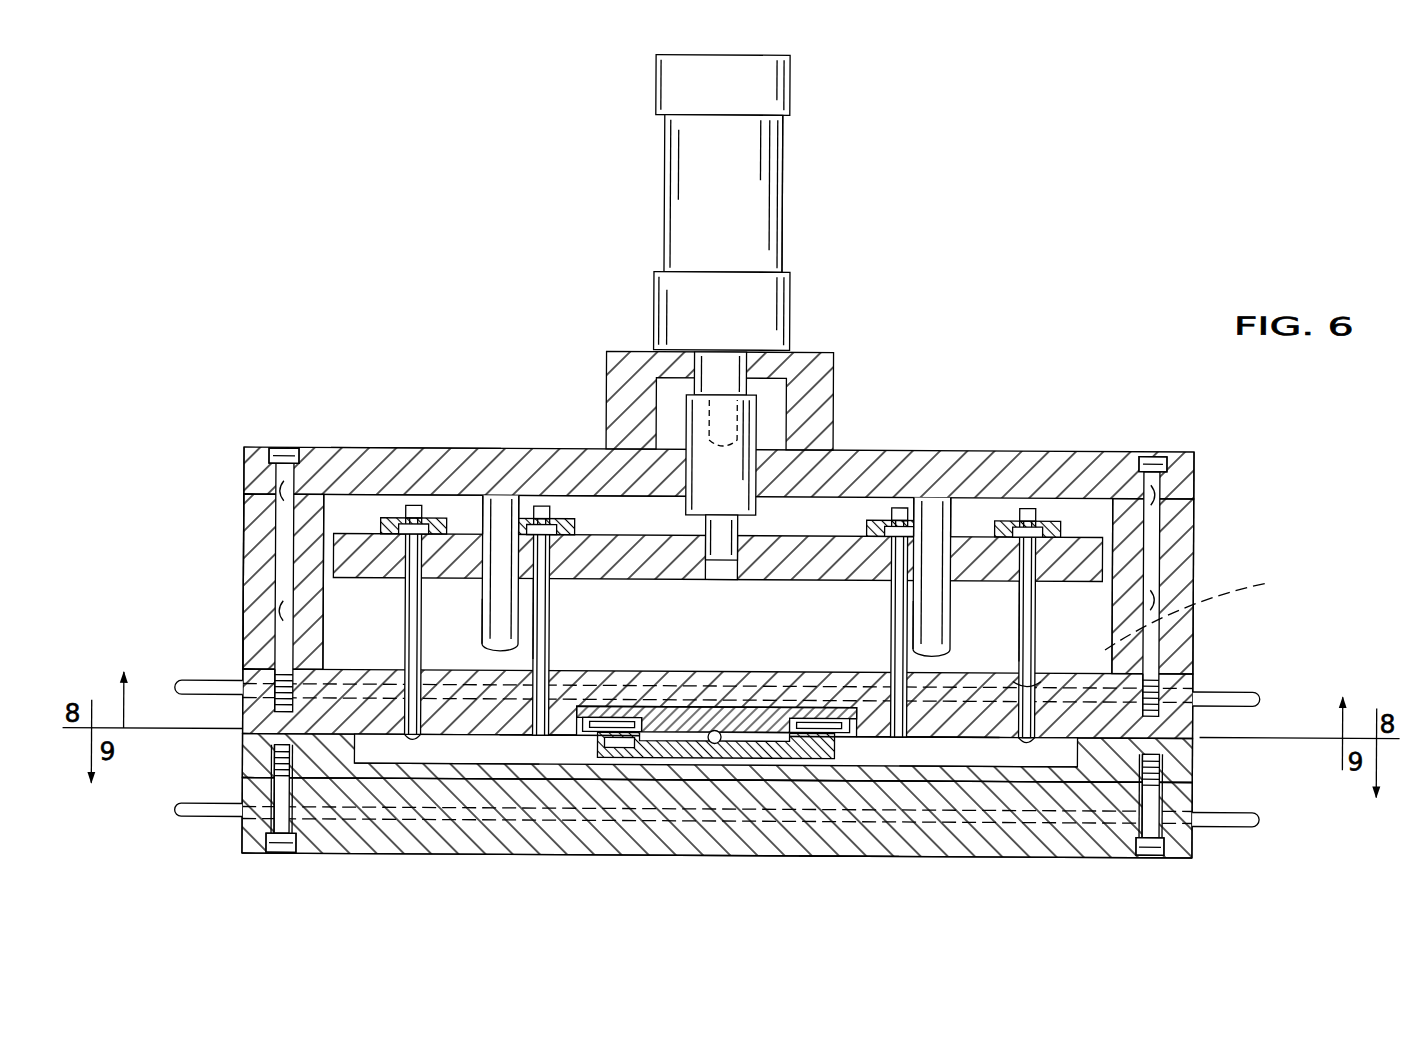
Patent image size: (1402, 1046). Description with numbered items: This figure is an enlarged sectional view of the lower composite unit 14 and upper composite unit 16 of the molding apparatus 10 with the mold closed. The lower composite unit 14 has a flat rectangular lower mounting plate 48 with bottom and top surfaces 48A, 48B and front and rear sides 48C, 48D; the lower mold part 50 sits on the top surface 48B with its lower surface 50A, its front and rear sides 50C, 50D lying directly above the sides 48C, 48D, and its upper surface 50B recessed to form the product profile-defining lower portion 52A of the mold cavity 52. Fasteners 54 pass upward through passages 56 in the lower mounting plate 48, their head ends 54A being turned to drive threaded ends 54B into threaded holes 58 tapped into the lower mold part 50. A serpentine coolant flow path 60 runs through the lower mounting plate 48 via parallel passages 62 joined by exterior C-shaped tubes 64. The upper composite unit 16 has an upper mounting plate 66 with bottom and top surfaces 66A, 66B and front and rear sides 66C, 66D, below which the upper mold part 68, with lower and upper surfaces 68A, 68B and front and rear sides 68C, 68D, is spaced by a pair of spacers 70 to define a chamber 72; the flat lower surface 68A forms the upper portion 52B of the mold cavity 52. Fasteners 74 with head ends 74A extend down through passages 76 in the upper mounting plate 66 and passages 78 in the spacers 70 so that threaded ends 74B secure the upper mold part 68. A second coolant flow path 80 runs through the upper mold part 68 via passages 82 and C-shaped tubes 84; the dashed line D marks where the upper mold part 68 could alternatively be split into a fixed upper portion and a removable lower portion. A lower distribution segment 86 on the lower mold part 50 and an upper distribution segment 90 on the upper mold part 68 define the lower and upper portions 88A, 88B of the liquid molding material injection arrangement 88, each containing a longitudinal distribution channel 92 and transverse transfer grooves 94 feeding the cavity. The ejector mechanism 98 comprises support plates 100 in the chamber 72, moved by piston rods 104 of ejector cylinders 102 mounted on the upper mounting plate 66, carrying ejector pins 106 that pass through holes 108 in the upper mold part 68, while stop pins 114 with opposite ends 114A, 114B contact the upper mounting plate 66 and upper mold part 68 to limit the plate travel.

The apparatus 10 is at (1040, 310).
The lower composite unit 14 is at (225, 838).
The upper composite unit 16 is at (341, 448).
The lower mounting plate 48 is at (592, 857).
The bottom surface 48A is at (865, 857).
The top surface 48B is at (540, 782).
The front side 48C is at (243, 851).
The rear side 48D is at (1212, 847).
The lower mold part 50 is at (1195, 762).
The lower surface 50A is at (400, 753).
The upper surface 50B is at (1125, 758).
The front side 50C is at (243, 745).
The rear side 50D is at (1195, 742).
The mold cavity 52 is at (537, 739).
The lower portion of mold cavity 52A is at (405, 761).
The upper portion of mold cavity 52B is at (512, 613).
The fasteners 54 is at (275, 854).
The tool-engaging head ends 54A is at (285, 857).
The threaded ends 54B is at (280, 763).
The passages 56 is at (297, 792).
The internally threaded holes 58 is at (285, 798).
The coolant flow path 60 is at (1025, 828).
The passages 62 is at (885, 795).
The C-shaped tubes 64 is at (210, 828).
The upper mounting plate 66 is at (1056, 448).
The bottom surface 66A is at (1097, 498).
The top surface 66B is at (405, 449).
The front side 66C is at (243, 465).
The rear side 66D is at (1193, 460).
The upper mold part 68 is at (1195, 678).
The lower surface 68A is at (590, 668).
The upper surface 68B is at (750, 682).
The front side 68C is at (243, 675).
The rear side 68D is at (1195, 697).
The spacers 70 is at (243, 550).
The chamber 72 is at (585, 519).
The fasteners 74 is at (290, 548).
The wrench-engaging head ends 74A is at (285, 449).
The threaded ends 74B is at (280, 678).
The passages 76 is at (283, 528).
The passages 78 is at (285, 638).
The coolant flow path 80 is at (680, 683).
The passages 82 is at (1027, 680).
The C-shaped tubes 84 is at (178, 689).
The lower liquid molding material distribution segment 86 is at (825, 760).
The liquid molding material injection arrangement 88 is at (585, 746).
The lower portion of injection arrangement 88A is at (700, 765).
The upper portion of injection arrangement 88B is at (760, 765).
The upper liquid molding material distribution segment 90 is at (715, 730).
The distribution channel 92 is at (712, 758).
The transfer grooves 94 is at (655, 760).
The ejector mechanism 98 is at (828, 152).
The support plates 100 is at (987, 542).
The ejector cylinders 102 is at (783, 215).
The piston rods 104 is at (752, 440).
The ejector pins 106 is at (532, 597).
The holes 108 is at (990, 682).
The stop pins 114 is at (548, 600).
The end of stop pin 114A is at (500, 496).
The end of stop pin 114B is at (505, 647).
The dashed line D is at (1203, 608).